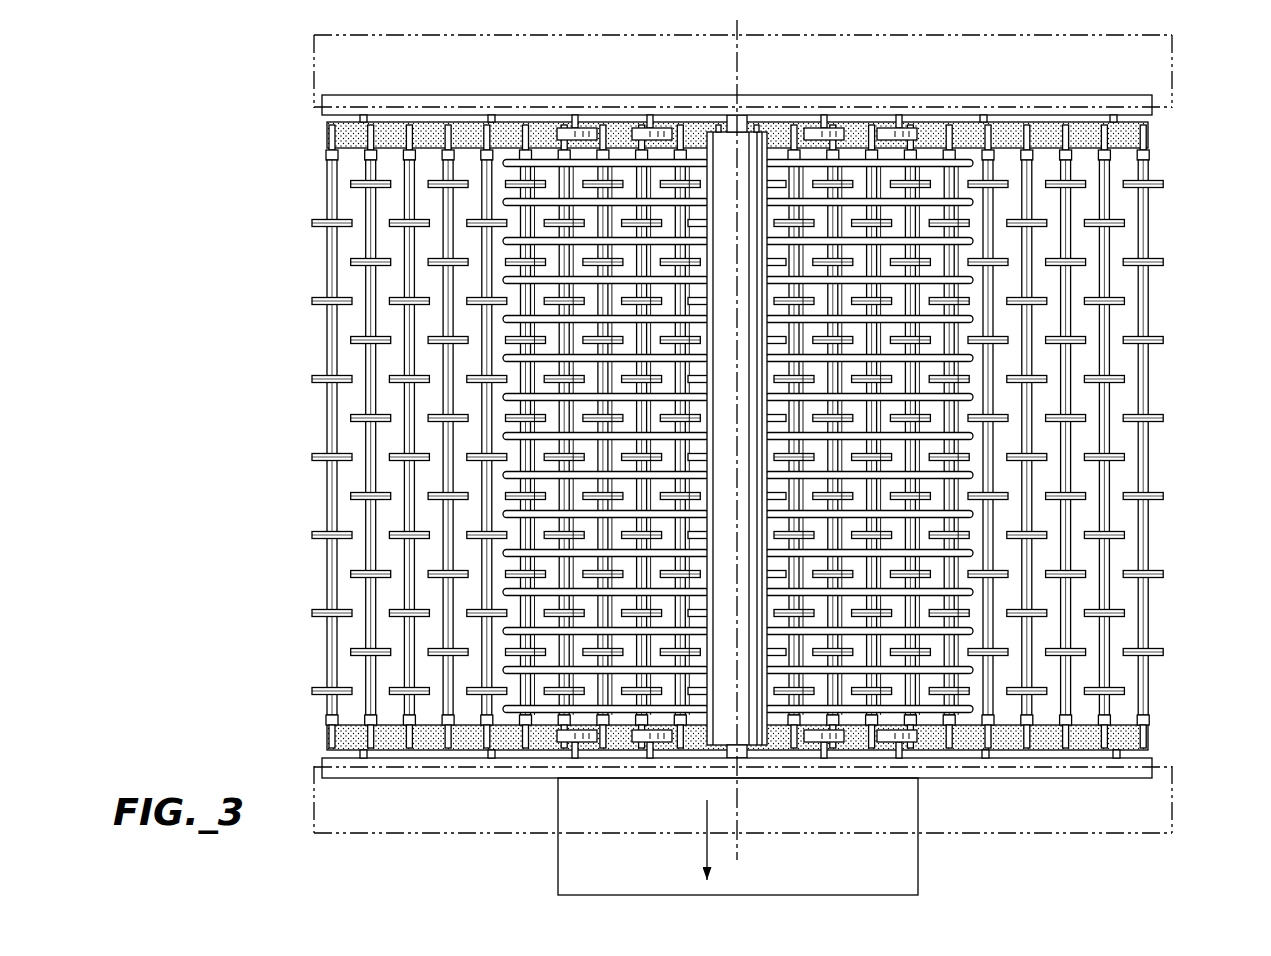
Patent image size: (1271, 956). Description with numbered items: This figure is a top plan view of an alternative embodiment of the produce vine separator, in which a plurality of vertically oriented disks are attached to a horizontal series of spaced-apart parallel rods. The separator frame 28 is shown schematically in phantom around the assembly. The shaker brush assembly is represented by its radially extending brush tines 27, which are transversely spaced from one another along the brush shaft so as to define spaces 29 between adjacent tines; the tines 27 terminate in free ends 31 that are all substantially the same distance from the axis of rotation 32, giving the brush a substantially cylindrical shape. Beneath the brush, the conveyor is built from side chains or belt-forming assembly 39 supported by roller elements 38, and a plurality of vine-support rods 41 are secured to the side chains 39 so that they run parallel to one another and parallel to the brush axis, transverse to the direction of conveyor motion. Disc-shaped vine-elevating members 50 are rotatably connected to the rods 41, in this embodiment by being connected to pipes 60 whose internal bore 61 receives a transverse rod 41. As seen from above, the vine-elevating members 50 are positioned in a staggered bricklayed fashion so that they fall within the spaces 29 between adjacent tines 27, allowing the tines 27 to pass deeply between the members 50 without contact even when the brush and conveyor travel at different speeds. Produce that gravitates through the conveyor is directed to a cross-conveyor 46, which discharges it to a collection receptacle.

The brush tines 27 is at (630, 232).
The separator frame 28 is at (1182, 74).
The spaces 29 is at (508, 256).
The free ends 31 is at (740, 62).
The axis of rotation 32 is at (740, 852).
The roller elements 38 is at (572, 748).
The side chains 39 is at (967, 737).
The rods 41 is at (1000, 135).
The cross-conveyor 46 is at (558, 855).
The vine-elevating members 50 is at (751, 436).
The pipes 60 is at (1152, 460).
The internal bore 61 is at (330, 732).